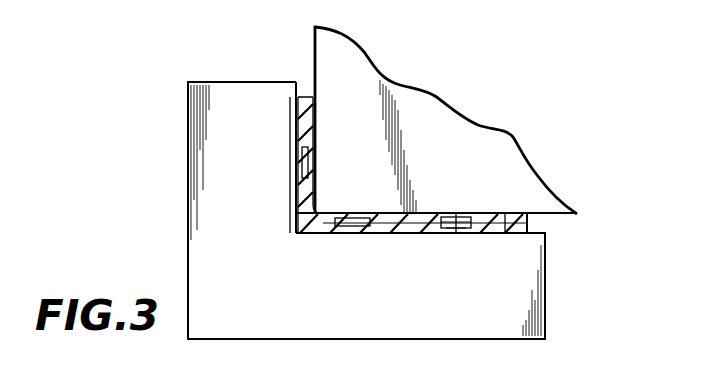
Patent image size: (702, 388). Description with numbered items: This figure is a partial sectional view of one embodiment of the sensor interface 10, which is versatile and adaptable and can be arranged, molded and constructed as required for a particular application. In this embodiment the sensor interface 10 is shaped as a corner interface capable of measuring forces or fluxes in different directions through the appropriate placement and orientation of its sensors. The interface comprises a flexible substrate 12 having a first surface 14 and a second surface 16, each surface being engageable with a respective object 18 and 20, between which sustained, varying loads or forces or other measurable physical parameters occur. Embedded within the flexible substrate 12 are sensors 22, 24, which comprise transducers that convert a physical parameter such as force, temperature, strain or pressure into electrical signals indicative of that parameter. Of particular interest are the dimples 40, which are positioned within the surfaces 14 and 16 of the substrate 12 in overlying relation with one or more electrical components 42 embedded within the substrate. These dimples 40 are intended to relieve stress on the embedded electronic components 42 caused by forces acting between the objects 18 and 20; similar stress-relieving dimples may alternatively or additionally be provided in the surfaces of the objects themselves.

The sensor interface 10 is at (566, 225).
The flexible substrate 12 is at (309, 236).
The first surface 14 is at (506, 214).
The second surface 16 is at (372, 236).
The object 18 is at (458, 118).
The object 20 is at (518, 310).
The sensor 22 is at (303, 150).
The sensor 24 is at (342, 236).
The dimple 40 is at (454, 236).
The electrical component 42 is at (448, 236).